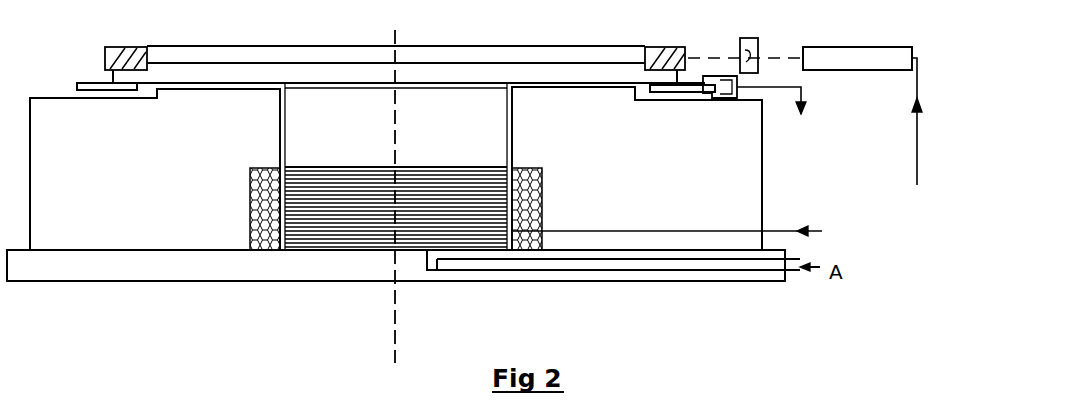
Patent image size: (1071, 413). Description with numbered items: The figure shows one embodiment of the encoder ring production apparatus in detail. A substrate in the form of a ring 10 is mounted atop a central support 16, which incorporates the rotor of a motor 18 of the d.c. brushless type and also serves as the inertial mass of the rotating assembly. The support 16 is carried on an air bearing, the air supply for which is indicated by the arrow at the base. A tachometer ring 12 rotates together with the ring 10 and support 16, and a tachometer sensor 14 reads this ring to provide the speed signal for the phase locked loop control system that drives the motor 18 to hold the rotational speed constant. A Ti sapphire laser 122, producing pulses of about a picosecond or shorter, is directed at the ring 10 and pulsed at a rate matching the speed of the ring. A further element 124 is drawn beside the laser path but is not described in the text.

The encoder ring 10 is at (105, 56).
The tachometer ring 12 is at (95, 84).
The tachometer sensor 14 is at (730, 98).
The central support 16 is at (337, 143).
The motor 18 is at (323, 222).
The Ti sapphire laser 122 is at (853, 53).
The sensor 124 is at (741, 40).